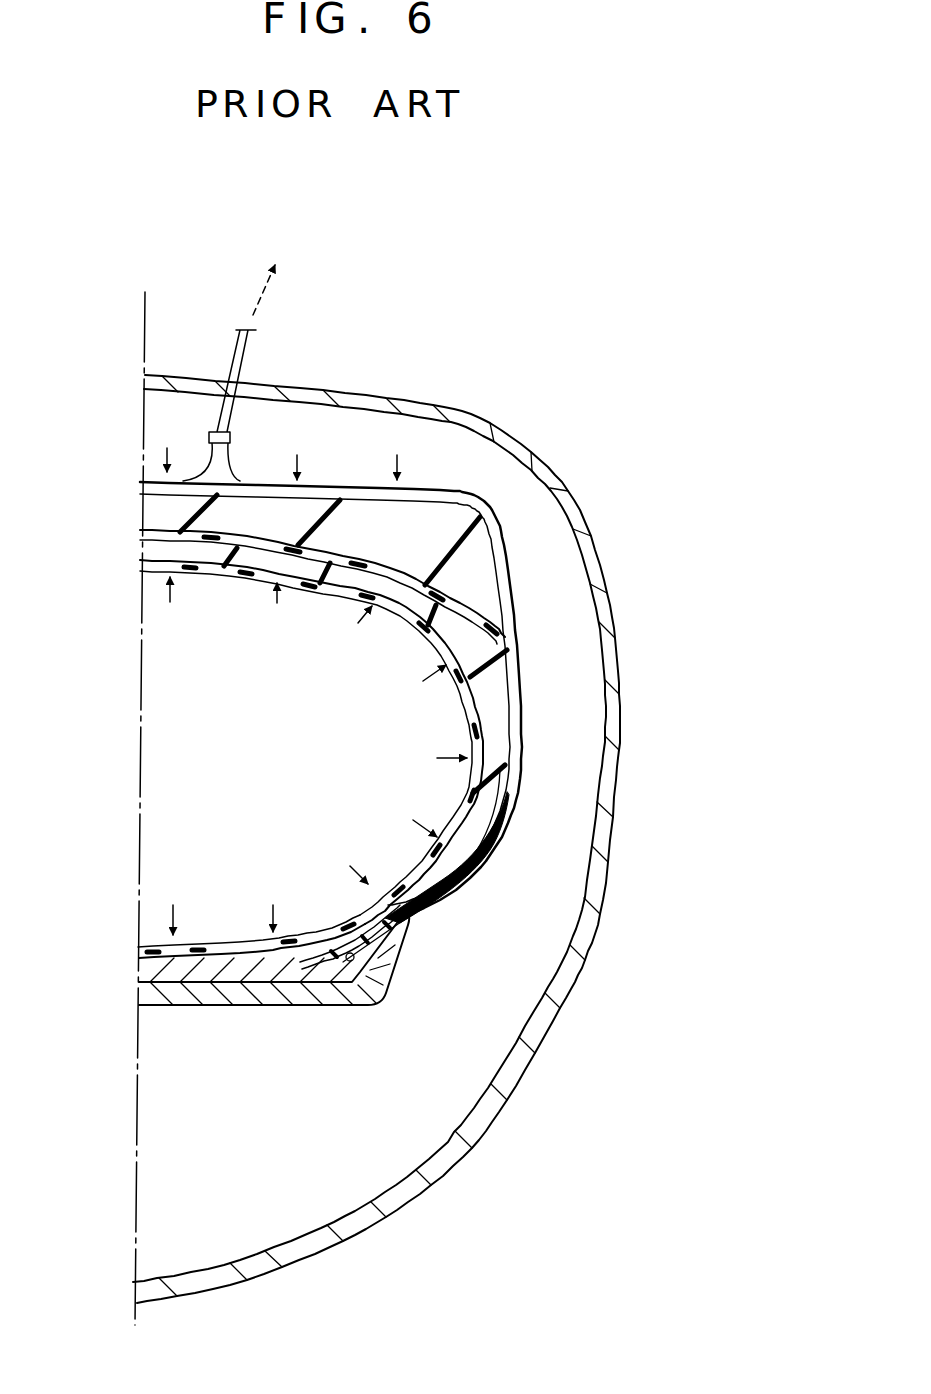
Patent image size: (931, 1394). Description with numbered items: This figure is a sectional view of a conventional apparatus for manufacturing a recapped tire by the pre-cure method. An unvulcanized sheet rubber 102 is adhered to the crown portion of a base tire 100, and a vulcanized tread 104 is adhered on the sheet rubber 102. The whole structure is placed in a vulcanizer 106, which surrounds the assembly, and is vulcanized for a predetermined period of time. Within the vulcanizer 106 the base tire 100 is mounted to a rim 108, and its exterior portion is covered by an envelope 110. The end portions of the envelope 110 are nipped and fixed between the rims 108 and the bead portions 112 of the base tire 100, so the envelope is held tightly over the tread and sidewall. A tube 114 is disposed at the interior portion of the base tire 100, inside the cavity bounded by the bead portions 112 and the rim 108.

The base tire 100 is at (152, 548).
The unvulcanized sheet rubber 102 is at (150, 525).
The vulcanized tread 104 is at (157, 500).
The vulcanizer 106 is at (527, 440).
The rim 108 is at (233, 1007).
The envelope 110 is at (507, 810).
The bead portions 112 is at (338, 935).
The tube 114 is at (205, 940).